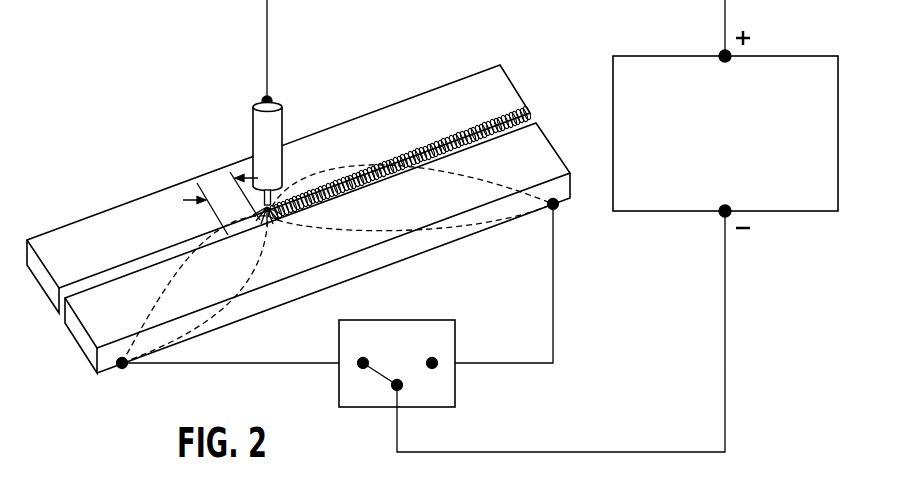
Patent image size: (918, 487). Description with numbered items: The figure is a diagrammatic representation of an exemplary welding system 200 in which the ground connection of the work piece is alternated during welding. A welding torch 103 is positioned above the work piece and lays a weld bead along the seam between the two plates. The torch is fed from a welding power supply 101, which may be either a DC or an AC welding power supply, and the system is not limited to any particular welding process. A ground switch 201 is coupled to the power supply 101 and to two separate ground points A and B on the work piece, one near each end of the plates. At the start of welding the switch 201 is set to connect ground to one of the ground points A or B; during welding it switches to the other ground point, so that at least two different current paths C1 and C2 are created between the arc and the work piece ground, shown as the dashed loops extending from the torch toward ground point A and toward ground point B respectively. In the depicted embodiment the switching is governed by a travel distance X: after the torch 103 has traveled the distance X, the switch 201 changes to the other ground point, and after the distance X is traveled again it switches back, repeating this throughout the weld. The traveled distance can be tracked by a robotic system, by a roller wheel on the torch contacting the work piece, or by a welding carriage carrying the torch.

The welding system 200 is at (126, 72).
The welding torch 103 is at (259, 132).
The welding power supply 101 is at (792, 211).
The ground switch 201 is at (455, 386).
The first current path C1 is at (190, 232).
The second current path C2 is at (349, 165).
The travel distance X is at (221, 203).
The first ground point A is at (122, 387).
The second ground point B is at (571, 221).